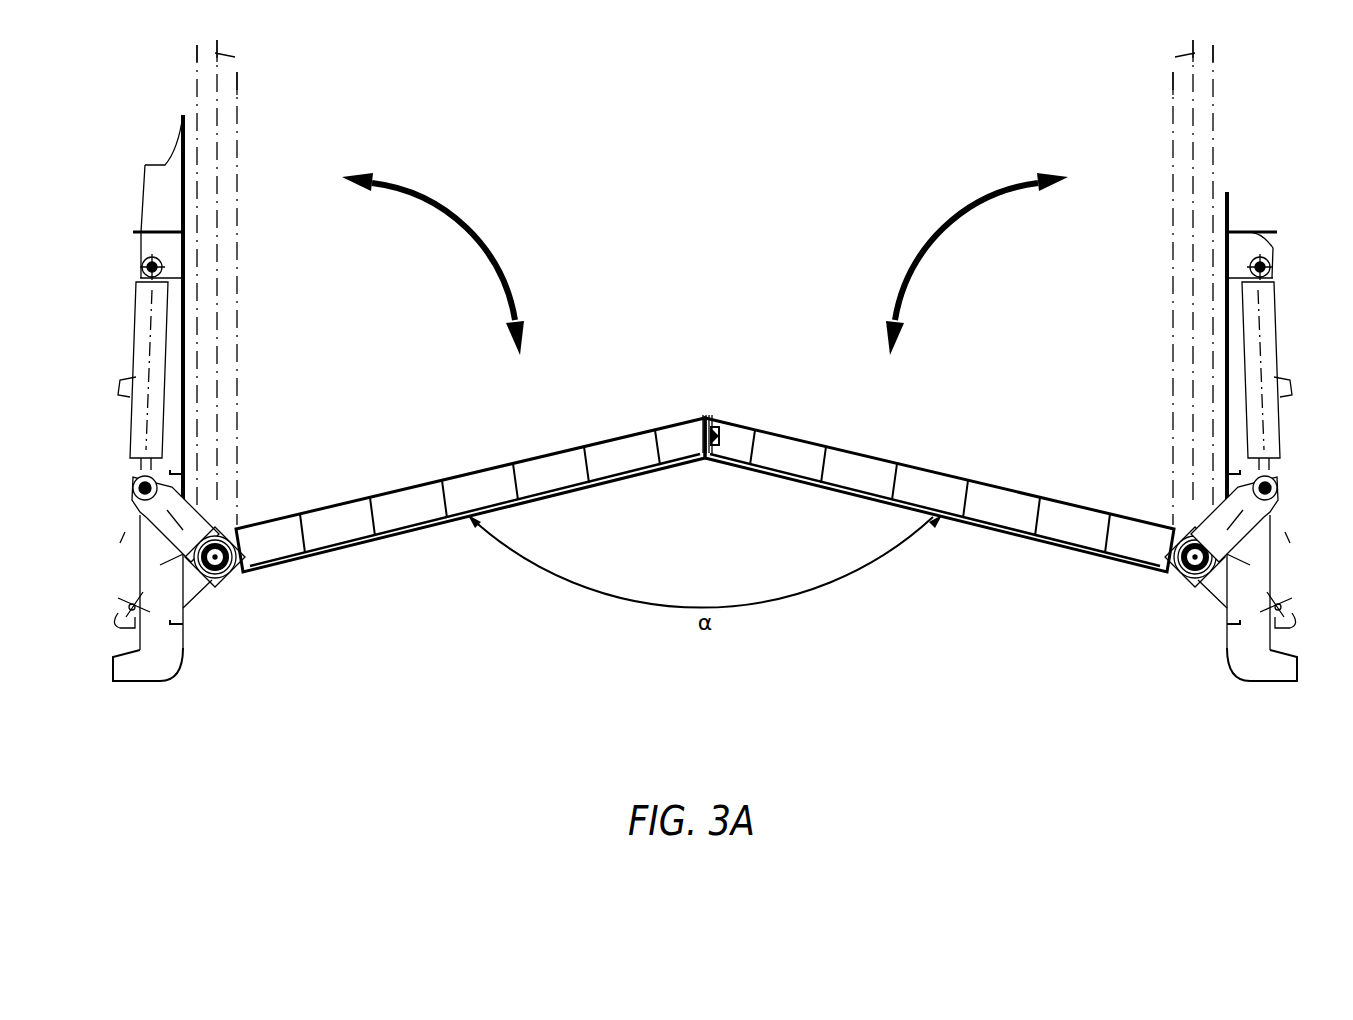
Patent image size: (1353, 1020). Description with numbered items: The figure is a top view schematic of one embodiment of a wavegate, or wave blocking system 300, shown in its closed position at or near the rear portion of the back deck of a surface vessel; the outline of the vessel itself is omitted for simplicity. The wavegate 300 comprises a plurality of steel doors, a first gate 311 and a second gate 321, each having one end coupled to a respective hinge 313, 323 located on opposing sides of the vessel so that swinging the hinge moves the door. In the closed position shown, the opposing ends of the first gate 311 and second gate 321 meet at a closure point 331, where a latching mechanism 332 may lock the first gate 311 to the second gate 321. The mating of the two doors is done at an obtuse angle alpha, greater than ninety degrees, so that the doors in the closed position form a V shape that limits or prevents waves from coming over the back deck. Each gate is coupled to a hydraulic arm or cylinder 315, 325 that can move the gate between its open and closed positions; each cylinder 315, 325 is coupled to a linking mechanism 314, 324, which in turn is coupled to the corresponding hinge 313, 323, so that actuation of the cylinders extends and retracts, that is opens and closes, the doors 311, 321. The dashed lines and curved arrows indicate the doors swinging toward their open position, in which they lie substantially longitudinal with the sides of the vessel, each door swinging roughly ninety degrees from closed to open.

The wavegate 300 is at (930, 699).
The first gate 311 is at (567, 480).
The hinge 313 is at (222, 580).
The linking mechanism 314 is at (129, 512).
The hydraulic cylinder 315 is at (132, 345).
The second gate 321 is at (1007, 522).
The hinge 323 is at (1188, 580).
The linking mechanism 324 is at (1281, 512).
The hydraulic cylinder 325 is at (1278, 345).
The closure point 331 is at (707, 415).
The latching mechanism 332 is at (722, 437).